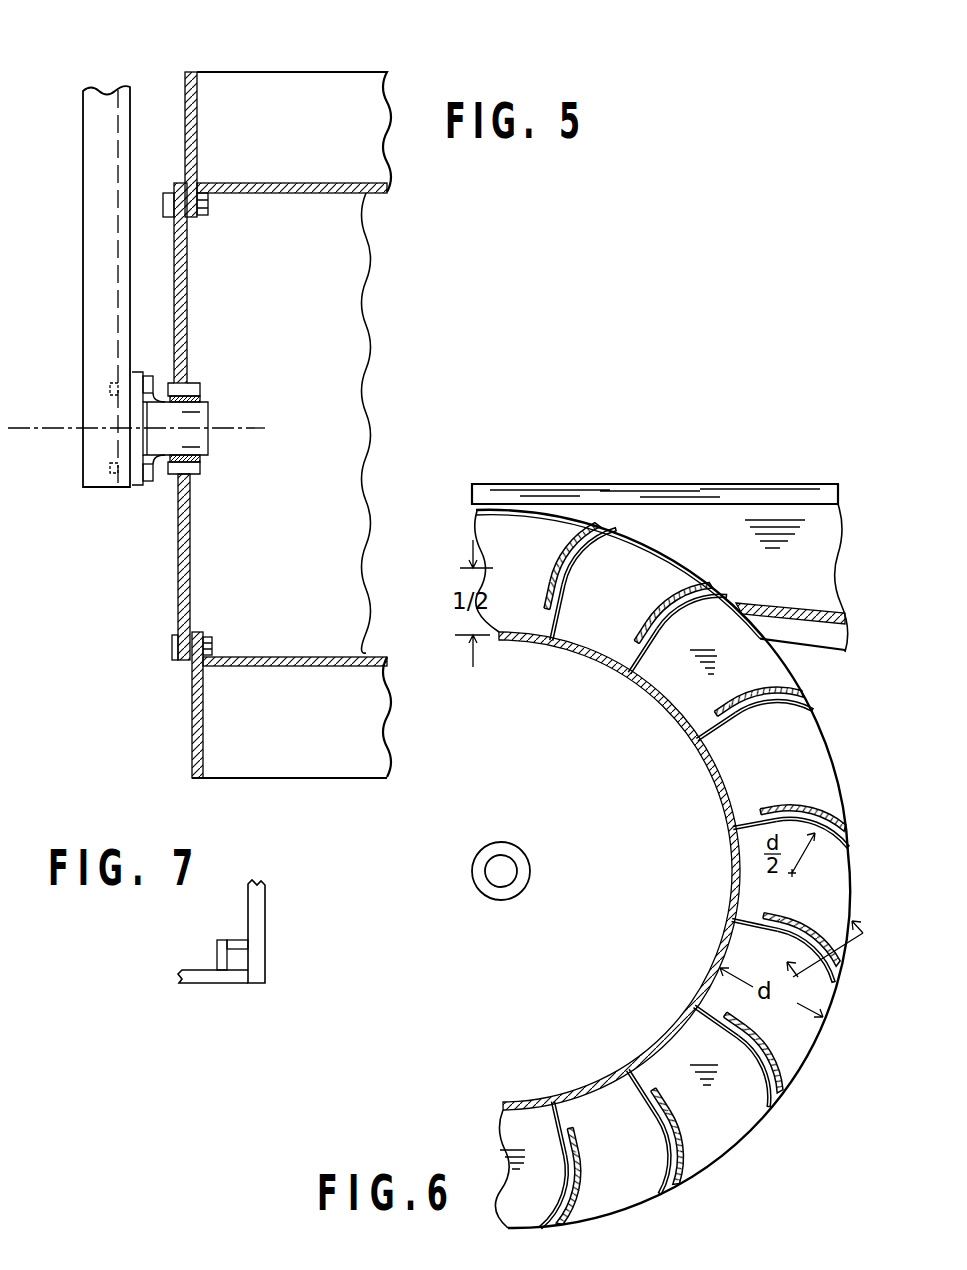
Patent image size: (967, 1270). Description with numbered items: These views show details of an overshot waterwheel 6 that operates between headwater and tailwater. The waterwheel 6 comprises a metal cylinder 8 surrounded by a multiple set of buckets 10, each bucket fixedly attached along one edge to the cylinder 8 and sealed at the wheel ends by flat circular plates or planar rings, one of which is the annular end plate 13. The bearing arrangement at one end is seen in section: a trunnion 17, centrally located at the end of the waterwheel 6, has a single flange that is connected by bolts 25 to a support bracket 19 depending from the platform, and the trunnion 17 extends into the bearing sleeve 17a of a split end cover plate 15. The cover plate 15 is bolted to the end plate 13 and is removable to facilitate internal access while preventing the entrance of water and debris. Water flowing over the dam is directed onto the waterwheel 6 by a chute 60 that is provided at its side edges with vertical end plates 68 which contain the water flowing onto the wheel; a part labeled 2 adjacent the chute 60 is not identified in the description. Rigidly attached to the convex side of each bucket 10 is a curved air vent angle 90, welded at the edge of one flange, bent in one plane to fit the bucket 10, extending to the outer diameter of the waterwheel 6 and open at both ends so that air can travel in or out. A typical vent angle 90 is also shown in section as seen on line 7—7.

In FIG. 6, the rotor yoke 2 is at (746, 504).
In FIG. 6, the overshot waterwheel 6 is at (740, 1138).
In FIG. 6, the section line 7- 7 is at (831, 959).
In FIG. 5, the metal cylinder 8 is at (251, 185).
In FIG. 6, the metal cylinder 8 is at (735, 831).
In FIG. 5, the buckets 10 is at (280, 72).
In FIG. 7, the buckets 10 is at (210, 984).
In FIG. 6, the buckets 10 is at (627, 1090).
In FIG. 5, the planar ring 13 is at (186, 72).
In FIG. 7, the planar ring 13 is at (265, 900).
In FIG. 6, the planar ring 13 is at (798, 1064).
In FIG. 5, the split end cover plate 15 is at (175, 287).
In FIG. 5, the trunnion 17 is at (202, 417).
In FIG. 5, the bearing sleeve 17a is at (190, 473).
In FIG. 5, the support bracket 19 is at (83, 270).
In FIG. 5, the bolts 25 is at (115, 368).
In FIG. 6, the chute 60 is at (769, 603).
In FIG. 6, the vertical end plates 68 is at (677, 484).
In FIG. 7, the curved air vent angles 90 is at (213, 940).
In FIG. 6, the curved air vent angles 90 is at (802, 690).